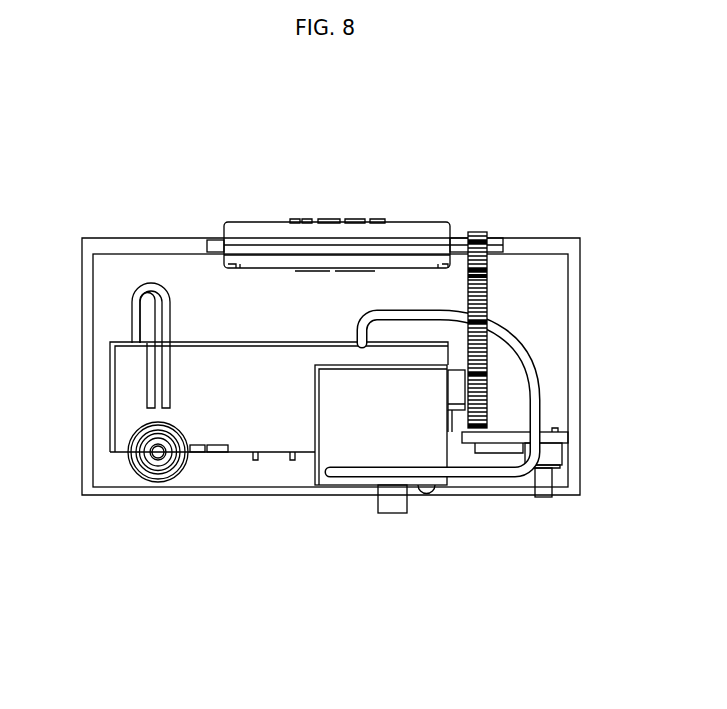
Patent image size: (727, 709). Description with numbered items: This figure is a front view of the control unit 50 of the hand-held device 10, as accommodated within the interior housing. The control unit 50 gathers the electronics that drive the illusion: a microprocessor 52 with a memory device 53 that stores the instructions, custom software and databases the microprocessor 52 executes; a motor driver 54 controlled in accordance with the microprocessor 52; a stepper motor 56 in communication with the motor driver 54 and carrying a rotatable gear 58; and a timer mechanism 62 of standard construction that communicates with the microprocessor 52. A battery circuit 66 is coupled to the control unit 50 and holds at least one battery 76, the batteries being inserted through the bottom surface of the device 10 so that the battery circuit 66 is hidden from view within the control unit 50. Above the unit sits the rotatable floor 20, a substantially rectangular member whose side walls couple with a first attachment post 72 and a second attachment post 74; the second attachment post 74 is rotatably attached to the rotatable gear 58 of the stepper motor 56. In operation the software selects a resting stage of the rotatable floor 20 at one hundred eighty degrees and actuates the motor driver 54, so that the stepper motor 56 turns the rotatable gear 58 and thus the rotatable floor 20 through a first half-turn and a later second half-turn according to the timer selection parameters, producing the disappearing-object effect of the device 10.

The device 10 is at (455, 516).
The rotatable floor 20 is at (406, 197).
The control unit 50 is at (290, 478).
The microprocessor 52 is at (198, 447).
The memory device 53 is at (218, 452).
The motor driver 54 is at (287, 378).
The stepper motor 56 is at (373, 410).
The rotatable gear 58 is at (483, 238).
The timer mechanism 62 is at (543, 457).
The battery circuit 66 is at (123, 437).
The first attachment post 72 is at (213, 247).
The second attachment post 74 is at (503, 243).
The battery 76 is at (137, 468).